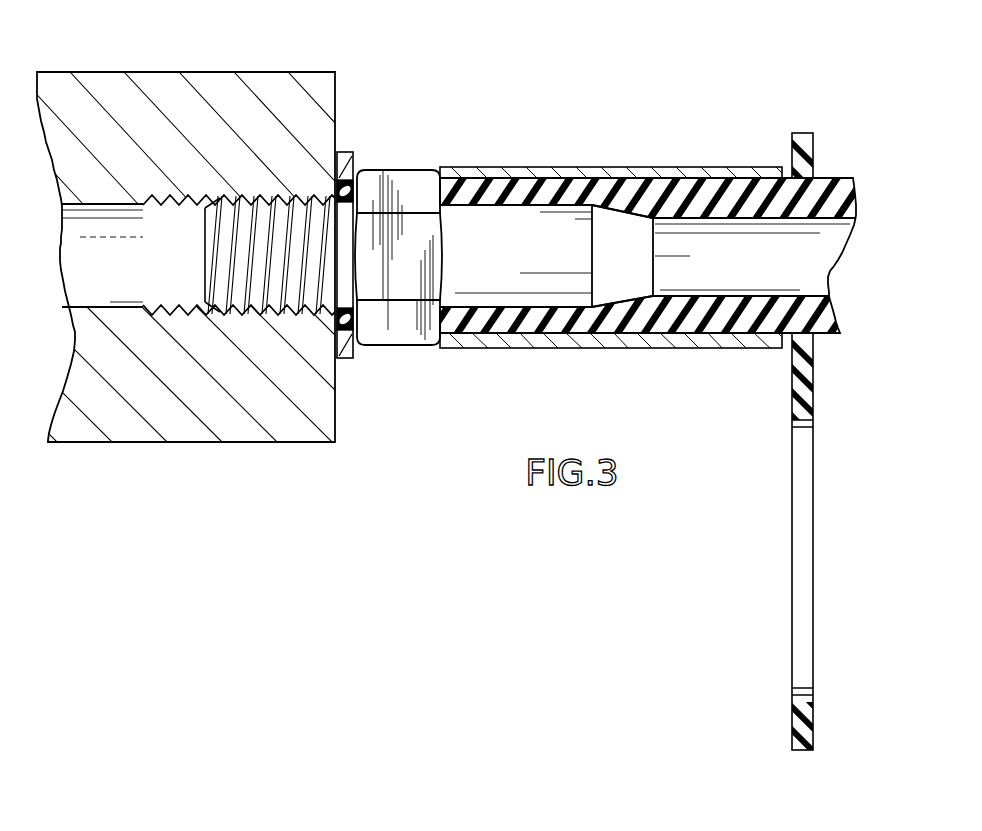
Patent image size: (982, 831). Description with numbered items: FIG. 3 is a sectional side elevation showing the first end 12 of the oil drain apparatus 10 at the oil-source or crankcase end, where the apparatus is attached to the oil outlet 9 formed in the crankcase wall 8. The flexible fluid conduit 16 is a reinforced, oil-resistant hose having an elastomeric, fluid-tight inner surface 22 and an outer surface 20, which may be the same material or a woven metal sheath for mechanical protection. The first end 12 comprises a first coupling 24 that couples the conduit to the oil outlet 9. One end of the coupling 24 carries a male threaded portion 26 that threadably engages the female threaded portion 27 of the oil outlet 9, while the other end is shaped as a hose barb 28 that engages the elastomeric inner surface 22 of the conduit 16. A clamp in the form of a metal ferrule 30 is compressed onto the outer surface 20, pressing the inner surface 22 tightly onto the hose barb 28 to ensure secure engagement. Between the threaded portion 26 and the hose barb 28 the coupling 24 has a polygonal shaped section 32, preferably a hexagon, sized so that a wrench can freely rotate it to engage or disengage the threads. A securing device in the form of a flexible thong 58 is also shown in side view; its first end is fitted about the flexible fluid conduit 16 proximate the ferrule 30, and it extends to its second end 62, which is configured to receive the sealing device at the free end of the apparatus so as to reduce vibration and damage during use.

The housing block 8 is at (166, 72).
The oil outlet 9 is at (78, 262).
The apparatus 10 is at (610, 222).
The first end 12 is at (420, 142).
The flexible fluid conduit 16 is at (826, 177).
The outer surface 20 is at (825, 337).
The inner surface 22 is at (806, 294).
The first coupling 24 is at (391, 362).
The male threaded portion 26 is at (203, 272).
The female threaded portion 27 is at (170, 305).
The hose barb 28 is at (645, 264).
The ferrule 30 is at (570, 350).
The polygonal shaped section 32 is at (397, 170).
The flexible thong 58 is at (790, 392).
The second end 62 is at (800, 753).